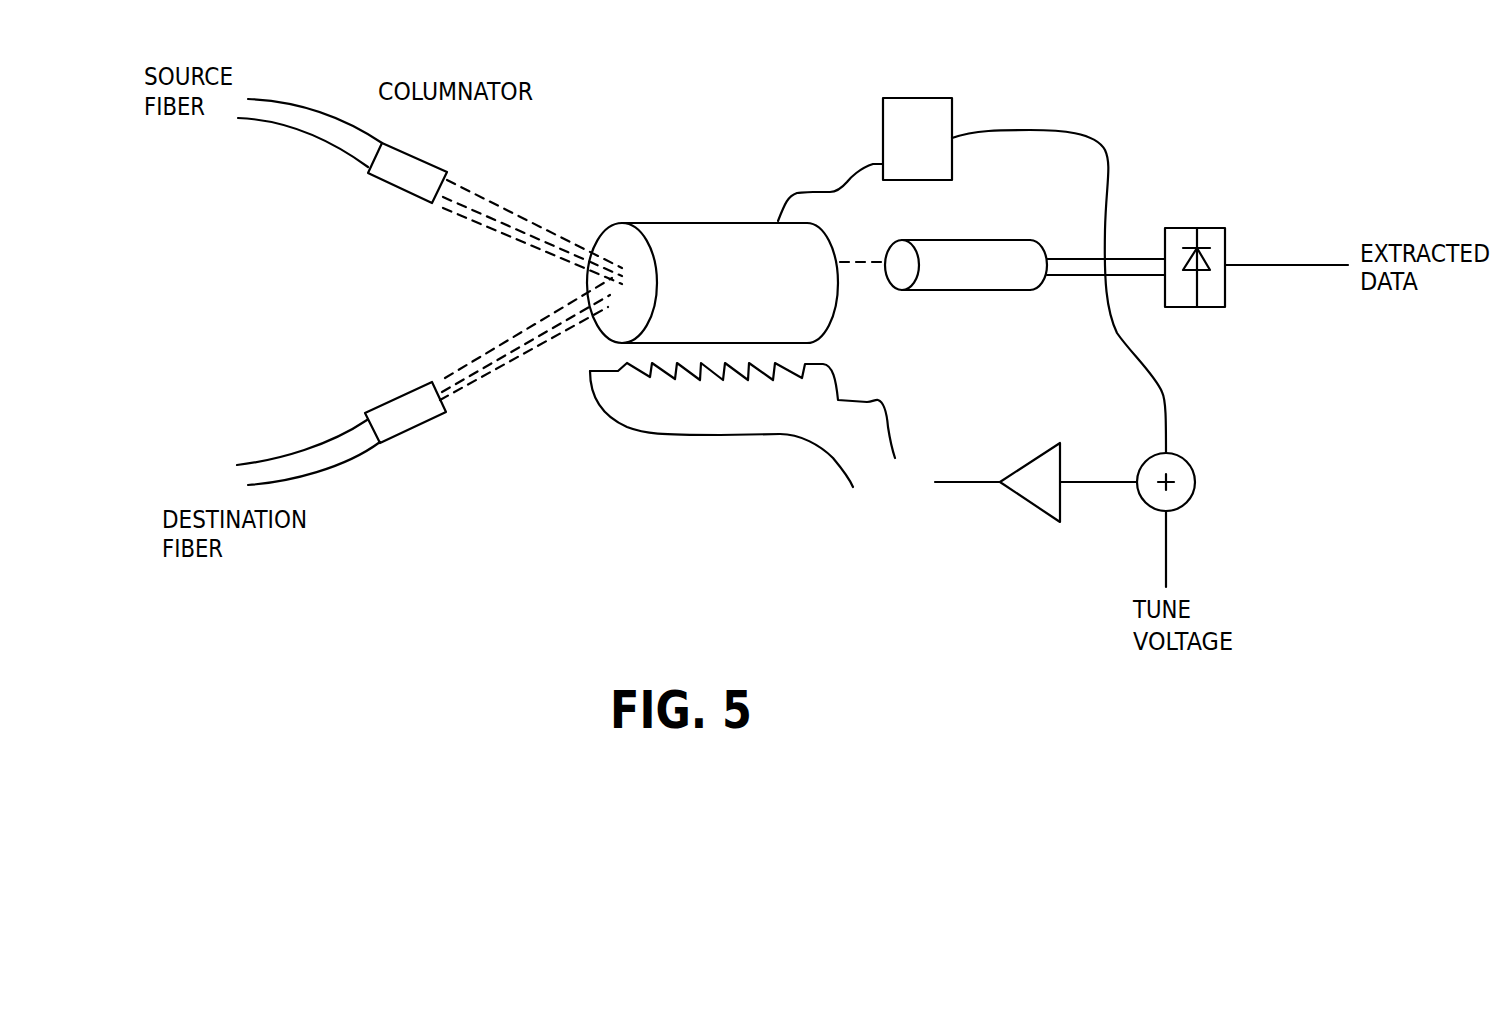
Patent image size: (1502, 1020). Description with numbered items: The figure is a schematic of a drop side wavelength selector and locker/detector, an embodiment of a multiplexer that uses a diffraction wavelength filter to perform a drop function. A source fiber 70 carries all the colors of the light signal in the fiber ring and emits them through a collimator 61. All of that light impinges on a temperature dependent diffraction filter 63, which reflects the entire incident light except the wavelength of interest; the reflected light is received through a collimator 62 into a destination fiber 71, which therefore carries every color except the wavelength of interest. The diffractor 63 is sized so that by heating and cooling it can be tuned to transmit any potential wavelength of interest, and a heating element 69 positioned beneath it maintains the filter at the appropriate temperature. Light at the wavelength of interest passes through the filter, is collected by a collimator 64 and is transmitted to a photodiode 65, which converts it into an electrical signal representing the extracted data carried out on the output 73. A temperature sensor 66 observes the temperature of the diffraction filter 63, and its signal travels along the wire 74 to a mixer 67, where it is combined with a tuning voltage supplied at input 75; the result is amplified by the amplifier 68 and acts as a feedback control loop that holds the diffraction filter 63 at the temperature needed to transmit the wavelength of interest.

The collimator 61 is at (407, 160).
The collimator 62 is at (405, 403).
The temperature dependent diffraction filter 63 is at (712, 265).
The collimator 64 is at (964, 250).
The photodiode 65 is at (1191, 252).
The temperature sensor 66 is at (897, 139).
The mixer 67 is at (1162, 469).
The amplifier 68 is at (1036, 474).
The heating element 69 is at (742, 425).
The source fiber 70 is at (310, 133).
The destination fiber 71 is at (308, 452).
The extracted data output 73 is at (1286, 252).
The control signal wire 74 is at (1059, 279).
The tune voltage input 75 is at (1188, 549).